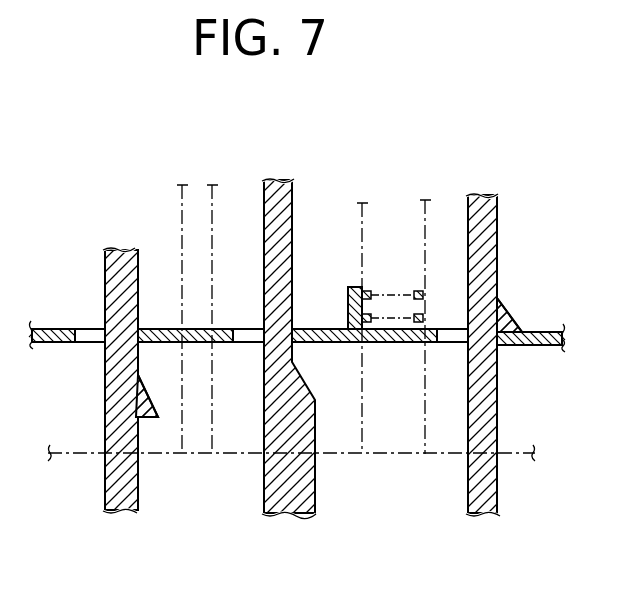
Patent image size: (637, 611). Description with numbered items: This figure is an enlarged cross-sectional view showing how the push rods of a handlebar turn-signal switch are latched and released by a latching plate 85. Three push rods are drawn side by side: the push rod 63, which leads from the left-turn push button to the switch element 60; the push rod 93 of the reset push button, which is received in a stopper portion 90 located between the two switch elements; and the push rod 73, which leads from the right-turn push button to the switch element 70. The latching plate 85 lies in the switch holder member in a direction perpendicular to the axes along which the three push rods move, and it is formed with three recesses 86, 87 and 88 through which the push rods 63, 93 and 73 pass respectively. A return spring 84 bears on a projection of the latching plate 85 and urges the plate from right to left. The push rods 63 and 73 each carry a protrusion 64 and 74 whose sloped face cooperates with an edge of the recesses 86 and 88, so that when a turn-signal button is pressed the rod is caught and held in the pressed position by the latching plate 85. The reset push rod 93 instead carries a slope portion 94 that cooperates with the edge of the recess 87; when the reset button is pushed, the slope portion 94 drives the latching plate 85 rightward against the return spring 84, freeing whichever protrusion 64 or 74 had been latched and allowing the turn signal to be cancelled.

The switch element 60 is at (120, 329).
The push rod 63 is at (104, 490).
The protrusion 64 is at (150, 396).
The switch element 70 is at (500, 341).
The push rod 73 is at (472, 487).
The protrusion 74 is at (499, 309).
The return spring 84 is at (384, 290).
The latching plate 85 is at (540, 347).
The recess 86 is at (90, 328).
The recess 87 is at (252, 328).
The recess 88 is at (452, 328).
The stopper portion 90 is at (295, 347).
The push rod 93 is at (262, 488).
The slope portion 94 is at (297, 383).